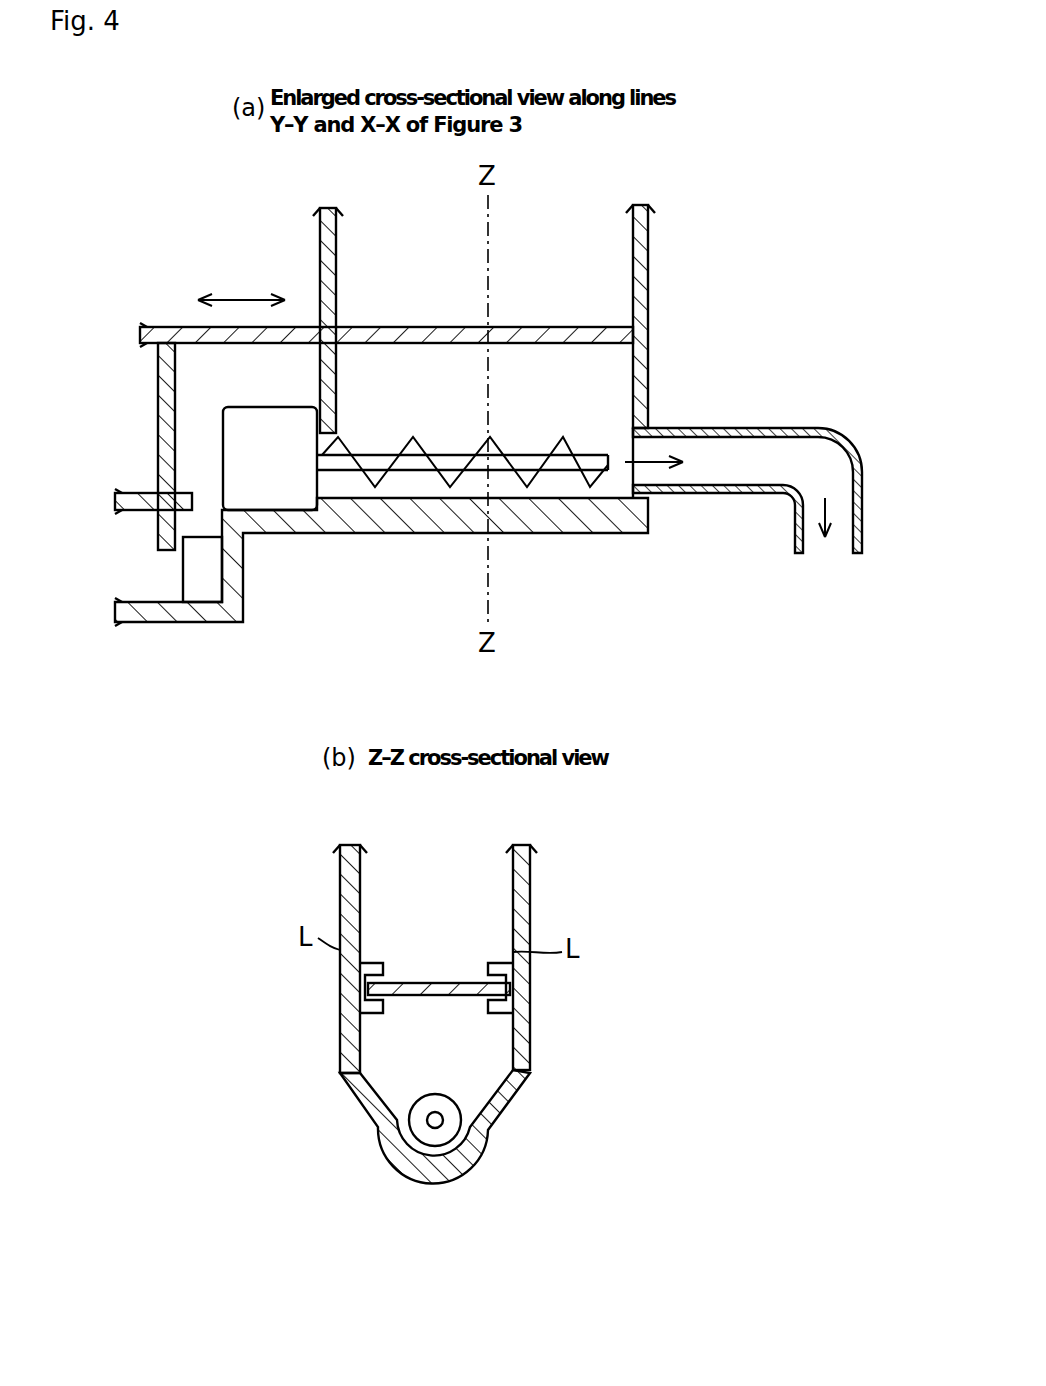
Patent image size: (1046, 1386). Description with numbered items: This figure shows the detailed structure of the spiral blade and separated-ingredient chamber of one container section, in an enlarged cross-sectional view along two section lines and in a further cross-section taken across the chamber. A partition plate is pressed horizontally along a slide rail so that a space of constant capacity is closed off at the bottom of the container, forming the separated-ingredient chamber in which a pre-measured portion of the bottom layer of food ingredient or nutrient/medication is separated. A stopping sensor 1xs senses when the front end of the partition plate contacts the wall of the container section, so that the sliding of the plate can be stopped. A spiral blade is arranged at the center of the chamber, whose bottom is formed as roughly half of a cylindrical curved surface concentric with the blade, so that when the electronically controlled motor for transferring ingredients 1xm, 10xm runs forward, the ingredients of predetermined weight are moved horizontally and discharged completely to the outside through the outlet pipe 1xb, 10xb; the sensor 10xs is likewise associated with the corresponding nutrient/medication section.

The electronically controlled motor for transferring ingredients 1xm is at (324, 502).
The electronically controlled motor for transferring ingredients 10xm is at (268, 490).
The sensor 1xs is at (212, 606).
The sensor 10xs is at (205, 578).
The outlet pipe 1xb is at (762, 528).
The ingredients outlet pipe 10xb is at (818, 553).